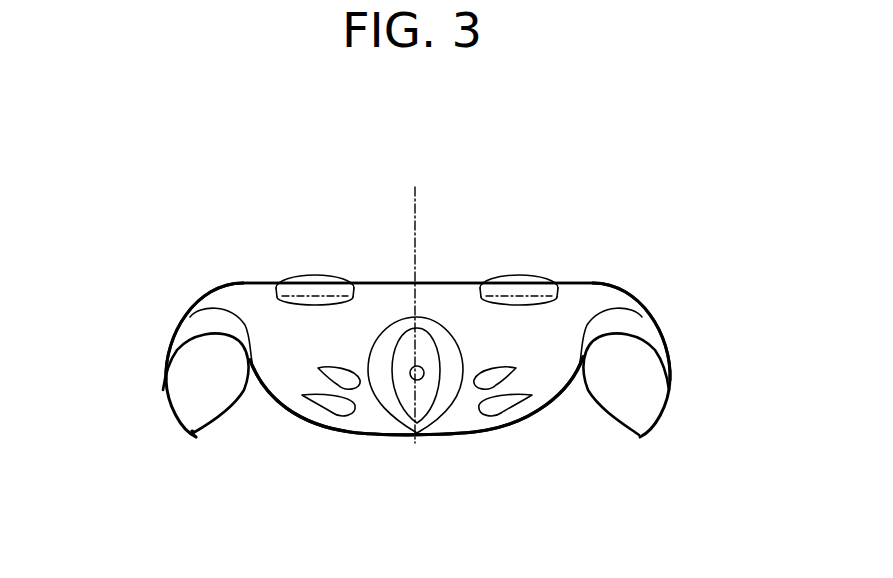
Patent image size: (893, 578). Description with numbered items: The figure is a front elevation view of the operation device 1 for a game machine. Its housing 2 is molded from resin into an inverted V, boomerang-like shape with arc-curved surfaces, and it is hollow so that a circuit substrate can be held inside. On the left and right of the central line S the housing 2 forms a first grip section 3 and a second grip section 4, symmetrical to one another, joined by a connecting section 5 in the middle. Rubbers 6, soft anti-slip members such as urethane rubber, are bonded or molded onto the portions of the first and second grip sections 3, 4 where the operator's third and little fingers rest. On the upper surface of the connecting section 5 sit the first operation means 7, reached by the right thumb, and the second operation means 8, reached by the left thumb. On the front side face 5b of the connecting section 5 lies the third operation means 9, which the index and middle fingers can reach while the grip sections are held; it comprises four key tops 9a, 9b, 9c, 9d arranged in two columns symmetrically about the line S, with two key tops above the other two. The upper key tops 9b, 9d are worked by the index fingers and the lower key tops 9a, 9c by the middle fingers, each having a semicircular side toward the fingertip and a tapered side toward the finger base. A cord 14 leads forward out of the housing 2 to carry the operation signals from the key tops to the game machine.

The operation device 1 is at (574, 274).
The housing 2 is at (620, 287).
The first grip section 3 is at (177, 317).
The second grip section 4 is at (663, 330).
The connecting section 5 is at (447, 287).
The front side face 5b is at (350, 337).
The rubbers 6 is at (188, 385).
The first operation means 7 is at (310, 273).
The second operation means 8 is at (518, 273).
The third operation means 9 is at (293, 391).
The key top 9a is at (327, 412).
The key top 9b is at (353, 390).
The key top 9c is at (497, 412).
The key top 9d is at (480, 392).
The cord 14 is at (422, 378).
The center line S is at (415, 187).